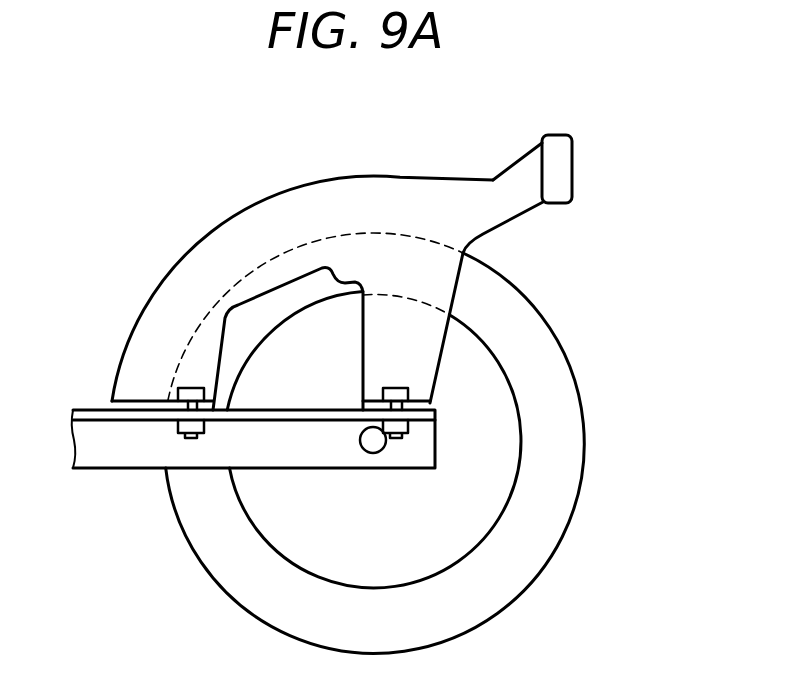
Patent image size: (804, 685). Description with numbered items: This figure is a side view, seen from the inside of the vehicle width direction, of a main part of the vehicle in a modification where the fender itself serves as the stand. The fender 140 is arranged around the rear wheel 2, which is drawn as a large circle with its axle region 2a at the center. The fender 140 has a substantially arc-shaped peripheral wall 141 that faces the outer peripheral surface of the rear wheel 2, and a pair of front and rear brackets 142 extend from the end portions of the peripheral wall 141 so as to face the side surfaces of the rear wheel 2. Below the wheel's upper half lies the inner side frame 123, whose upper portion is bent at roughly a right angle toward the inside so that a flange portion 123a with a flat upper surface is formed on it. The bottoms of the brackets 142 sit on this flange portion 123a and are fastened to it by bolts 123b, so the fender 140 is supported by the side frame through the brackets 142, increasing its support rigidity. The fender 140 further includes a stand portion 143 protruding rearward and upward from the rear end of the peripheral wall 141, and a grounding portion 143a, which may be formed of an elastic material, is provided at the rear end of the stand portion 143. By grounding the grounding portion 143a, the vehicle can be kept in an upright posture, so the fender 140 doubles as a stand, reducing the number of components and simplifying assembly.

The rear wheel 2 is at (584, 431).
The axle 2a is at (373, 443).
The inner side frame 123 is at (97, 470).
The flange portion 123a is at (302, 422).
The bolts 123b is at (186, 390).
The fender 140 is at (307, 187).
The peripheral wall 141 is at (215, 228).
The brackets 142 is at (373, 323).
The stand portion 143 is at (521, 158).
The grounding portion 143a is at (573, 170).